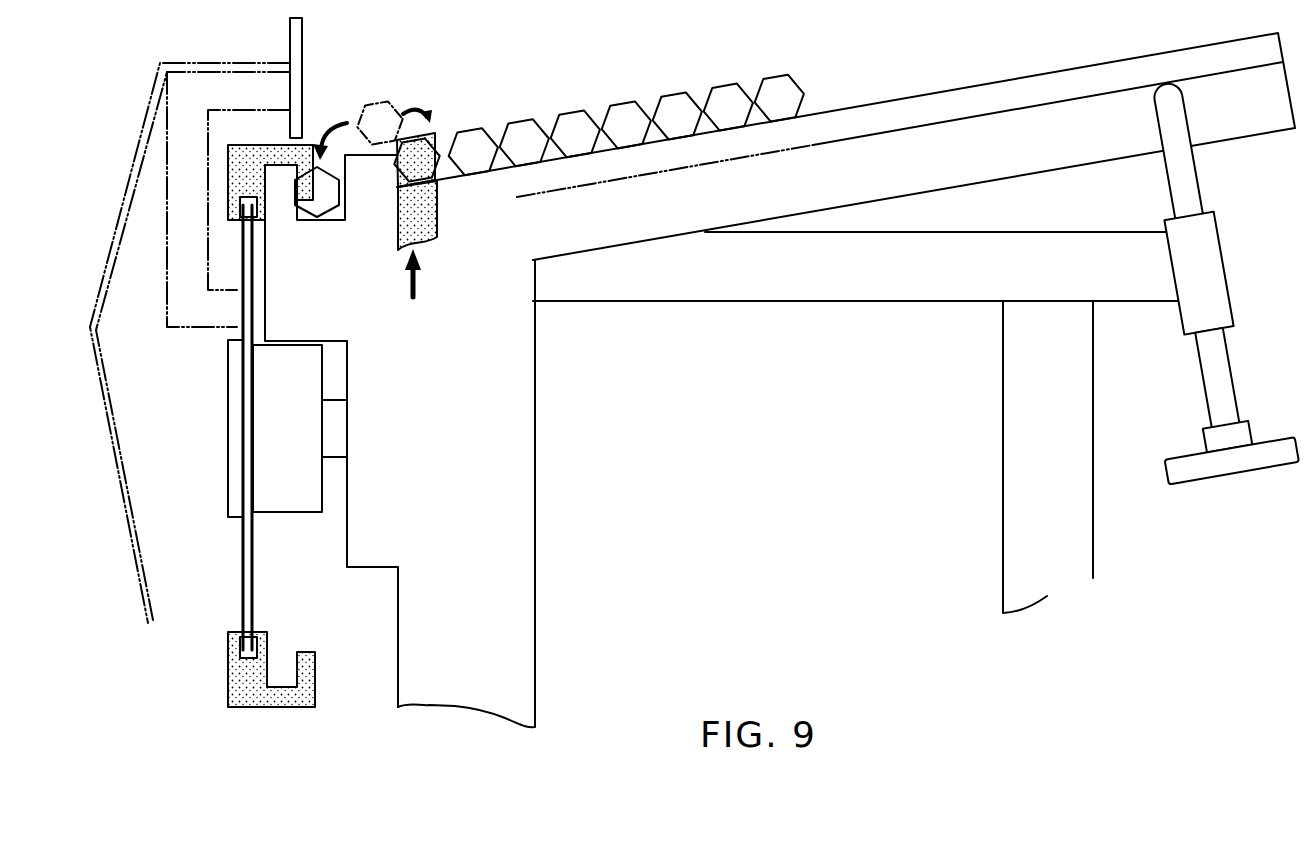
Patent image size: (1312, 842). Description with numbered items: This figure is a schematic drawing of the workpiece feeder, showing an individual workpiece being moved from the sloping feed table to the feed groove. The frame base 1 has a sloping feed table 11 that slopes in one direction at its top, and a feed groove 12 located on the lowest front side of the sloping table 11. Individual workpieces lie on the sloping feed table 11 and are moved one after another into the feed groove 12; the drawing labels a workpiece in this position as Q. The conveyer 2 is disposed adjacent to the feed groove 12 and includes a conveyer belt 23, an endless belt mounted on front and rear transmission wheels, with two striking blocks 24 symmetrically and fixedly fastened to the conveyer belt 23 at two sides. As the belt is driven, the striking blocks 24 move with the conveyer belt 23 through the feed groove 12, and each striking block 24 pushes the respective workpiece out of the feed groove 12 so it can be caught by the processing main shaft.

The frame base 1 is at (508, 436).
The conveyer 2 is at (218, 527).
The sloping feed table 11 is at (921, 110).
The feed groove 12 is at (328, 220).
The conveyer belt 23 is at (243, 562).
The striking blocks 24 is at (252, 147).
The nut Q is at (402, 172).